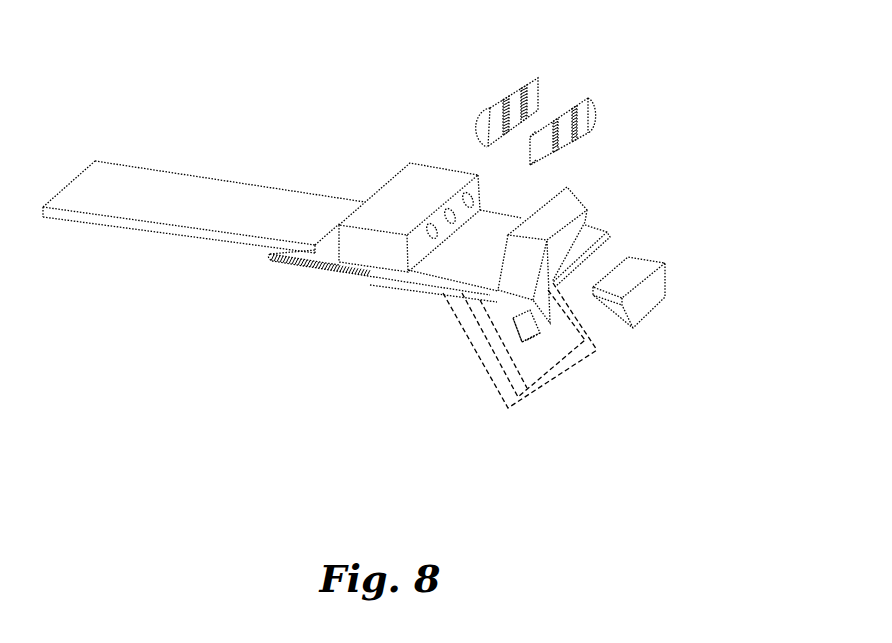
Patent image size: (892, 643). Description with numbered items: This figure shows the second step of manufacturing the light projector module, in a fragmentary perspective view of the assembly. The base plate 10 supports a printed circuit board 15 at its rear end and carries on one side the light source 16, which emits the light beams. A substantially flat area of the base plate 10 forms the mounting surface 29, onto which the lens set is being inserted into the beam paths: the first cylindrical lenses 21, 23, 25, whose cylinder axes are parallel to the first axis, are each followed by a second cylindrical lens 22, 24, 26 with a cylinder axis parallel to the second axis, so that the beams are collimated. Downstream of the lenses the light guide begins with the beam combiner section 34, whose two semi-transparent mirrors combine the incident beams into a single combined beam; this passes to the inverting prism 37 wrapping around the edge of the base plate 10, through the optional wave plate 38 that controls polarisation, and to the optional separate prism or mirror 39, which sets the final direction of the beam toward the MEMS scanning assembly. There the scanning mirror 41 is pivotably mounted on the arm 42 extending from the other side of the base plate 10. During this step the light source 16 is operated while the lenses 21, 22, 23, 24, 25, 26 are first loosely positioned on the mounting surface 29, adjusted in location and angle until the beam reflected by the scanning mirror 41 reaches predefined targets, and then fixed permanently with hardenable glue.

The base plate 10 is at (360, 273).
The printed circuit board 15 is at (210, 195).
The light source 16 is at (393, 193).
The first cylindrical lens 21 is at (525, 82).
The second cylindrical lens 22 is at (590, 127).
The first cylindrical lens 23 is at (508, 95).
The second cylindrical lens 24 is at (565, 147).
The first cylindrical lens 25 is at (487, 113).
The second cylindrical lens 26 is at (550, 158).
The mounting surface 29 is at (458, 267).
The beam combiner section 34 is at (577, 223).
The inverting prism 37 is at (522, 307).
The wave plate 38 is at (557, 302).
The prism or mirror 39 is at (638, 265).
The scanning mirror 41 is at (535, 342).
The arm 42 is at (490, 363).